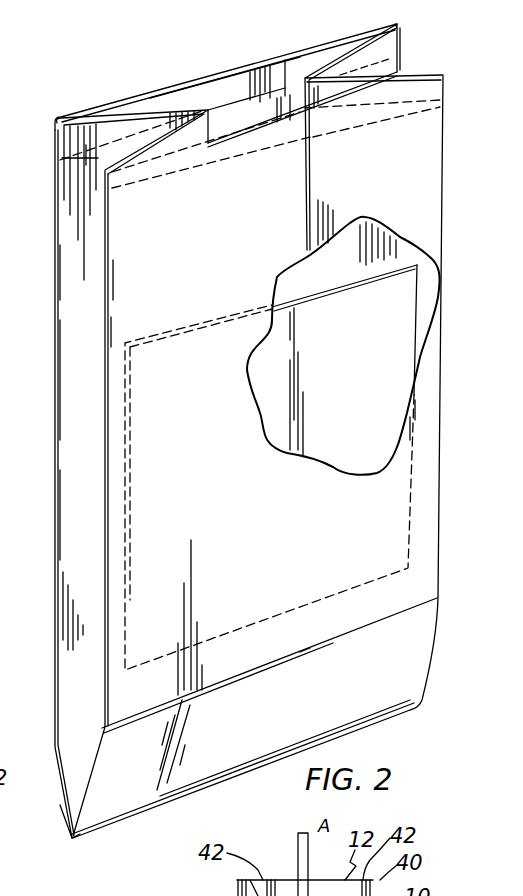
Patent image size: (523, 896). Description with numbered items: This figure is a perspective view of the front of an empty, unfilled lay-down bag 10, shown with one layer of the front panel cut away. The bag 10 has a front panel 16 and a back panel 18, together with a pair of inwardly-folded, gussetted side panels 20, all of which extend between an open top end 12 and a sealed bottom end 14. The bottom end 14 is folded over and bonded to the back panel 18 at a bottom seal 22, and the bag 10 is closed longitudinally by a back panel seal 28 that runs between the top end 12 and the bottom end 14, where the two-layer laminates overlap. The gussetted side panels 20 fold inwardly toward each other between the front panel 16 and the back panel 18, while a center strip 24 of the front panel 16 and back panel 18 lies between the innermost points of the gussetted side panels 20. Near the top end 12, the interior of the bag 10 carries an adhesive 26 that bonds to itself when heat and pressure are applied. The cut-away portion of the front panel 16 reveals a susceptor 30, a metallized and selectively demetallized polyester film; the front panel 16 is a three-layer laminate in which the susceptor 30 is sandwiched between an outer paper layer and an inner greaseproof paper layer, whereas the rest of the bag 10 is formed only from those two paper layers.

The lay-down bag 10 is at (50, 385).
The open top end 12 is at (308, 10).
The sealed bottom end 14 is at (47, 775).
The front panel 16 is at (282, 217).
The back panel 18 is at (143, 96).
The gussetted side panels 20 is at (412, 41).
The bottom seal 22 is at (58, 806).
The center strip 24 is at (233, 120).
The adhesive 26 is at (335, 50).
The back panel seal 28 is at (183, 84).
The susceptor 30 is at (357, 377).